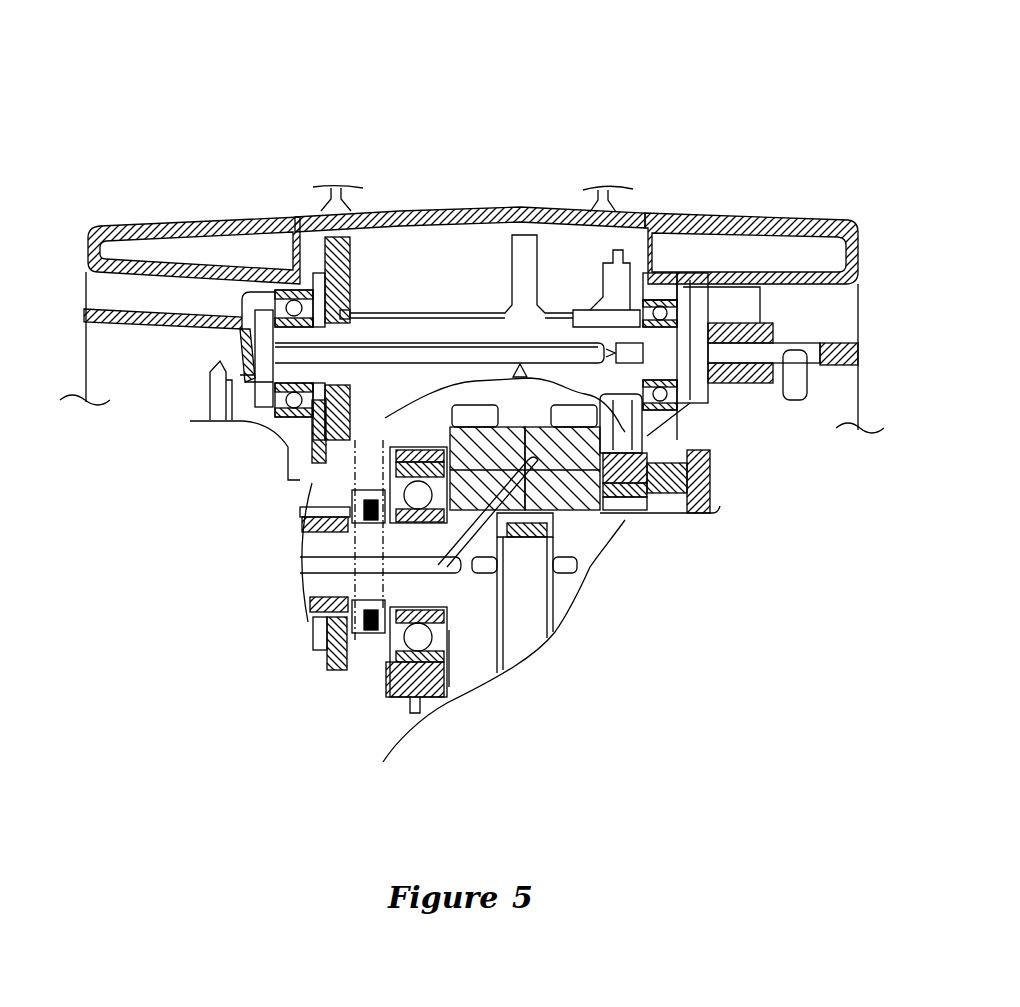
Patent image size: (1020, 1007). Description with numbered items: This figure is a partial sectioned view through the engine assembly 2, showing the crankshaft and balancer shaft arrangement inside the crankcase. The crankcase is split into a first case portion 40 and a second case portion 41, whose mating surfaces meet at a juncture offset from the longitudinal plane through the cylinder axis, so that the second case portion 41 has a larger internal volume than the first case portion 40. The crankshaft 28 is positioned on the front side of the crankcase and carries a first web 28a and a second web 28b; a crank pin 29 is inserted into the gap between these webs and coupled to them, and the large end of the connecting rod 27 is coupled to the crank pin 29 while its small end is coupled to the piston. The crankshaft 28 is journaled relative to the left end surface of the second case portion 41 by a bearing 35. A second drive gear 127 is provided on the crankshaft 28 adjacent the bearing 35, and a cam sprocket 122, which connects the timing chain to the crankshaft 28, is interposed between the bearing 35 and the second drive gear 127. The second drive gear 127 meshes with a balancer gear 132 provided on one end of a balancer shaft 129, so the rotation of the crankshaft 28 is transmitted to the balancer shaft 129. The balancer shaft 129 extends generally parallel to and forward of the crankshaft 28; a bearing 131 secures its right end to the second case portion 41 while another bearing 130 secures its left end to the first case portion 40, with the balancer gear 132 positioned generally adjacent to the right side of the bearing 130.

The drive assembly 2 is at (787, 101).
The connecting rod 27 is at (527, 637).
The crankshaft 28 is at (320, 583).
The first web 28a is at (471, 418).
The second web 28b is at (563, 418).
The crank pin 29 is at (327, 463).
The bearing 35 is at (397, 693).
The first case portion 40 is at (92, 224).
The second case portion 41 is at (853, 243).
The cam sprocket 122 is at (370, 632).
The second drive gear 127 is at (315, 647).
The balancer shaft 129 is at (382, 323).
The bearing 130 is at (292, 280).
The bearing 131 is at (660, 297).
The balancer gear 132 is at (360, 213).